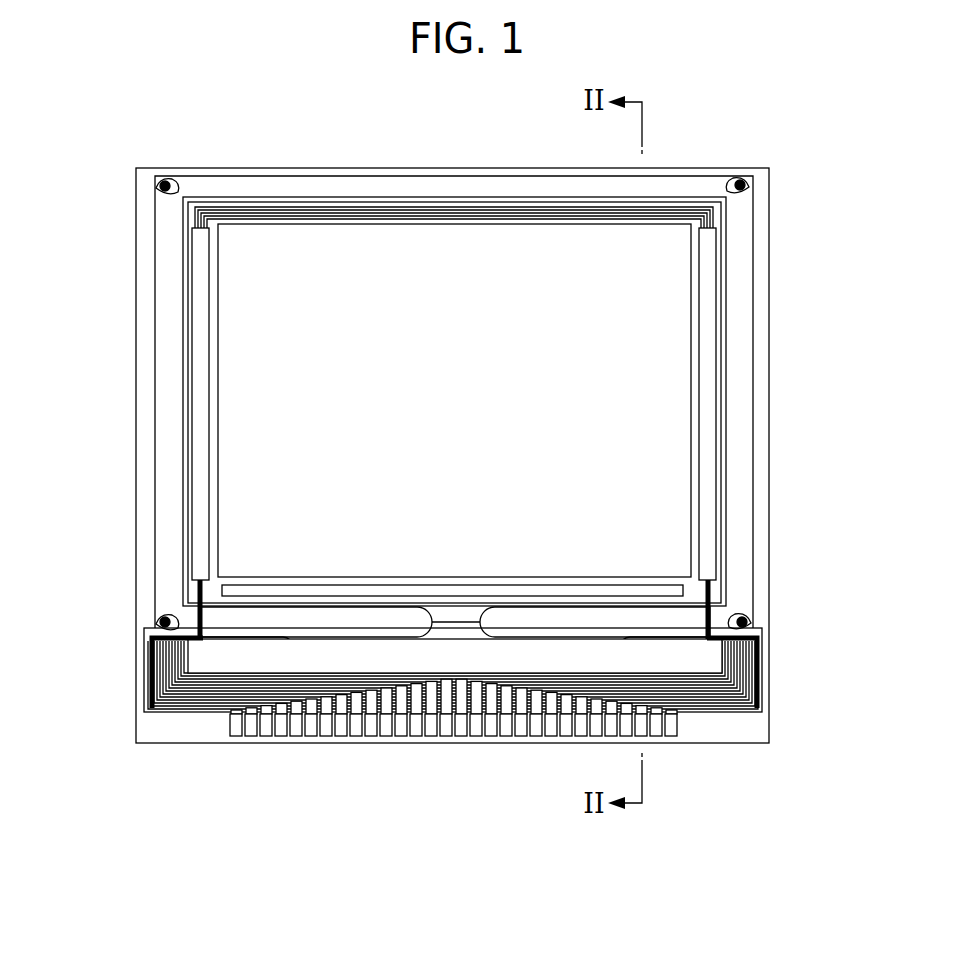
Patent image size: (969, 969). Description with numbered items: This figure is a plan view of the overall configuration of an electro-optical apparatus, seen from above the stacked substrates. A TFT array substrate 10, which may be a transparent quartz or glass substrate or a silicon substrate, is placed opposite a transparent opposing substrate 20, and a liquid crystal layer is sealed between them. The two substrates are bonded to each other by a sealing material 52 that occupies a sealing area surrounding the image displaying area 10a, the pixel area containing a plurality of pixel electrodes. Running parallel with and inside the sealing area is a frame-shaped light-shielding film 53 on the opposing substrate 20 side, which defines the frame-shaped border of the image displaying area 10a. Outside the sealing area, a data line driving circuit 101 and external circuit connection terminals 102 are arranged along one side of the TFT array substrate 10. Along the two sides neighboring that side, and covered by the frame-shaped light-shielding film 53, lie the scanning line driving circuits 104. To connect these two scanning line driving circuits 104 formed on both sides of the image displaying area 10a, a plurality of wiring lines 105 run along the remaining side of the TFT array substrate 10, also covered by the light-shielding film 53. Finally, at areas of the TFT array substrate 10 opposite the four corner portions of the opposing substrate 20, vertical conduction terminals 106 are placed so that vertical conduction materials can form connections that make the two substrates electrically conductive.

The TFT array substrate 10 is at (268, 168).
The image displaying area 10a is at (258, 353).
The opposing substrate 20 is at (476, 176).
The sealing material 52 is at (742, 332).
The frame-shaped light-shielding film 53 is at (690, 591).
The data line driving circuit 101 is at (210, 662).
The external circuit connection terminals 102 is at (414, 717).
The scanning line driving circuits 104 is at (710, 403).
The wiring lines 105 is at (376, 215).
The vertical conduction terminals 106 is at (172, 184).